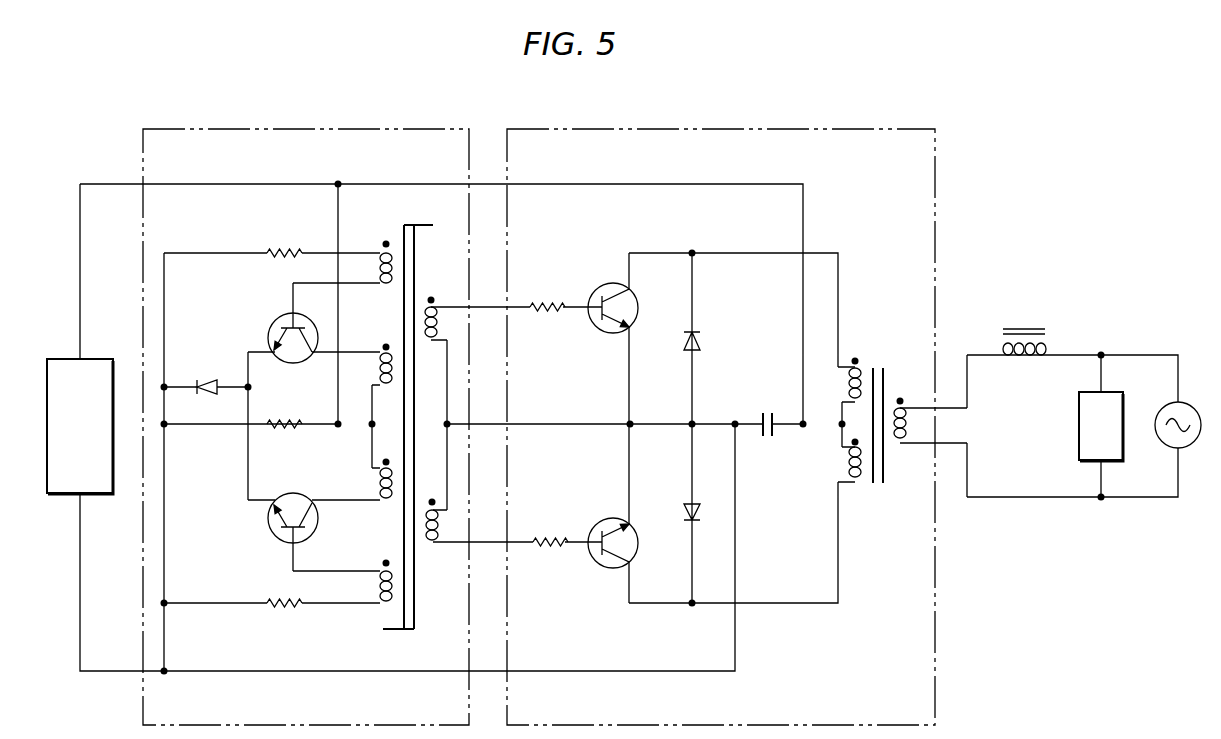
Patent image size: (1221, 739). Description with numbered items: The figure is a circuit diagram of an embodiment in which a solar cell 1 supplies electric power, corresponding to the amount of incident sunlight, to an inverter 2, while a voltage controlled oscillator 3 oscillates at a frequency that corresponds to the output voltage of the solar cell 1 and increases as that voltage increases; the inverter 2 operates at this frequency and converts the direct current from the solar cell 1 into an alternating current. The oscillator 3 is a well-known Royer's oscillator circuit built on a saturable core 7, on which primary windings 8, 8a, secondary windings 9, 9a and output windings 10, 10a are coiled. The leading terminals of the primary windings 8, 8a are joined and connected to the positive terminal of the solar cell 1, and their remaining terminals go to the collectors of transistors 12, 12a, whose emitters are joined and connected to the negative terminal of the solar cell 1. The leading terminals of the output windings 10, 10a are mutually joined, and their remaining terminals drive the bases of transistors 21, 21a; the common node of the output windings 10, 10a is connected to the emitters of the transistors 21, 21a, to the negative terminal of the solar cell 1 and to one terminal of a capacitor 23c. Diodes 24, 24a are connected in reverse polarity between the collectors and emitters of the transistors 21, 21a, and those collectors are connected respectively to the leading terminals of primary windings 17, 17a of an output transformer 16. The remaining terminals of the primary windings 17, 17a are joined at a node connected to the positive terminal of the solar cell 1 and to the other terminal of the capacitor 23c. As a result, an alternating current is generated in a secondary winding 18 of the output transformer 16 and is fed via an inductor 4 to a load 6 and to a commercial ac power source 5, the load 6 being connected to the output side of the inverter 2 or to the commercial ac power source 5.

The solar cell 1 is at (61, 358).
The inverter 2 is at (906, 128).
The voltage controlled oscillator 3 is at (448, 128).
The inductor 4 is at (1046, 345).
The commercial ac power source 5 is at (1190, 406).
The load 6 is at (1114, 394).
The saturable core 7 is at (414, 225).
The primary winding 8 is at (380, 375).
The primary winding 8a is at (382, 487).
The secondary winding 9 is at (380, 270).
The secondary winding 9a is at (380, 590).
The output winding 10 is at (438, 304).
The output winding 10a is at (442, 530).
The transistor 12 is at (273, 321).
The transistor 12a is at (274, 532).
The output transformer 16 is at (885, 378).
The primary winding 17 is at (850, 389).
The primary winding 17a is at (851, 466).
The secondary winding 18 is at (912, 452).
The transistor 21 is at (599, 287).
The transistor 21a is at (599, 570).
The capacitor 23c is at (768, 410).
The diode 24 is at (682, 344).
The diode 24a is at (682, 512).